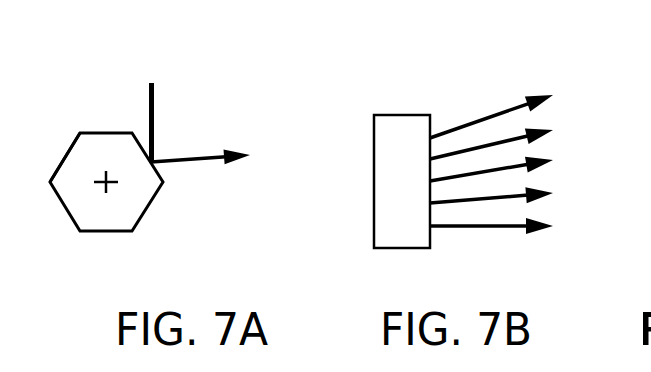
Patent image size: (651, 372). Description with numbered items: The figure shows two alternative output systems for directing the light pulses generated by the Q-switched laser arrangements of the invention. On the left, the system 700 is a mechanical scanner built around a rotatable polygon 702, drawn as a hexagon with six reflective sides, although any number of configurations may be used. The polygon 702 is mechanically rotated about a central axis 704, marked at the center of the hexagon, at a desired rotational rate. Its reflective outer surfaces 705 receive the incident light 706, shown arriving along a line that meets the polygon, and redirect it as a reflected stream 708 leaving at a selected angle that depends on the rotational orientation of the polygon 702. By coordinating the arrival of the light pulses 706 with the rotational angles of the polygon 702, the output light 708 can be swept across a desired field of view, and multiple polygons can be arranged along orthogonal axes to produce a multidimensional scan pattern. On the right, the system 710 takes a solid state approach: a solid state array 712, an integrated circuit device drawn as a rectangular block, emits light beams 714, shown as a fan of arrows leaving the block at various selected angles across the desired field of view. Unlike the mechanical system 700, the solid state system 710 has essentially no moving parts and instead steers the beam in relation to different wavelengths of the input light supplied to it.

In FIG. 7A, the system 700 is at (222, 27).
In FIG. 7A, the rotatable polygon 702 is at (108, 142).
In FIG. 7A, the central axis 704 is at (106, 182).
In FIG. 7A, the reflective outer surfaces 705 is at (65, 157).
In FIG. 7A, the incident light 706 is at (152, 117).
In FIG. 7A, the reflected stream 708 is at (208, 163).
In FIG. 7B, the system 710 is at (540, 27).
In FIG. 7B, the solid state array 712 is at (395, 122).
In FIG. 7B, the light beams 714 is at (497, 112).